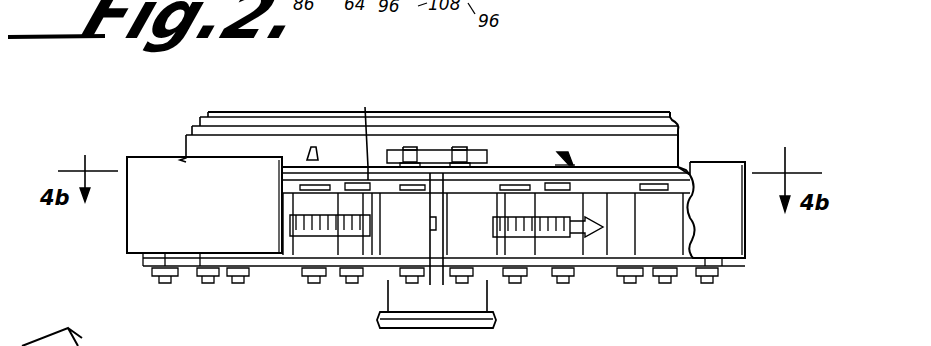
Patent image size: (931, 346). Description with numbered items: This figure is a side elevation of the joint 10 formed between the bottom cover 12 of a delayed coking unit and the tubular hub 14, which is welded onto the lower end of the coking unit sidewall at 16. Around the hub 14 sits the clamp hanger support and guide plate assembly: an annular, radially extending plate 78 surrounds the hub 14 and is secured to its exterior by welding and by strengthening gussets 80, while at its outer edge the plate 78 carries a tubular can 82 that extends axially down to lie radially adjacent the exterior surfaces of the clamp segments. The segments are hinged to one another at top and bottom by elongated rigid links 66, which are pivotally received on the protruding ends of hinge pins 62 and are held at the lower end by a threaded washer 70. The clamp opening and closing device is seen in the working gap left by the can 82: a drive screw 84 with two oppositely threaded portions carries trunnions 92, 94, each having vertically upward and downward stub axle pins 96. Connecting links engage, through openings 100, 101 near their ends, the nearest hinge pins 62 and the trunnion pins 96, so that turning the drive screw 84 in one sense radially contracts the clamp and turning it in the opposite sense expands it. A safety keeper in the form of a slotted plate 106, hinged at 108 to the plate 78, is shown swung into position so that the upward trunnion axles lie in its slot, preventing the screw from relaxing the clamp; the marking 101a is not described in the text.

The joint 10 is at (110, 260).
The bottom cover 12 is at (272, 273).
The tubular hub 14 is at (247, 145).
The weld 16 is at (670, 117).
The hinge pin 62 is at (356, 175).
The link 66 is at (614, 190).
The threaded washer 70 is at (718, 276).
The plate 78 is at (640, 171).
The gusset 80 is at (583, 155).
The can 82 is at (135, 224).
The drive screw 84 is at (543, 227).
The trunnion 92 is at (392, 248).
The trunnion 94 is at (436, 304).
The stub axle pin 96 is at (407, 150).
The link opening 100 is at (357, 132).
The link opening 101 is at (392, 178).
The post extension 101a is at (80, 336).
The slotted plate 106 is at (425, 150).
The hinge 108 is at (443, 150).